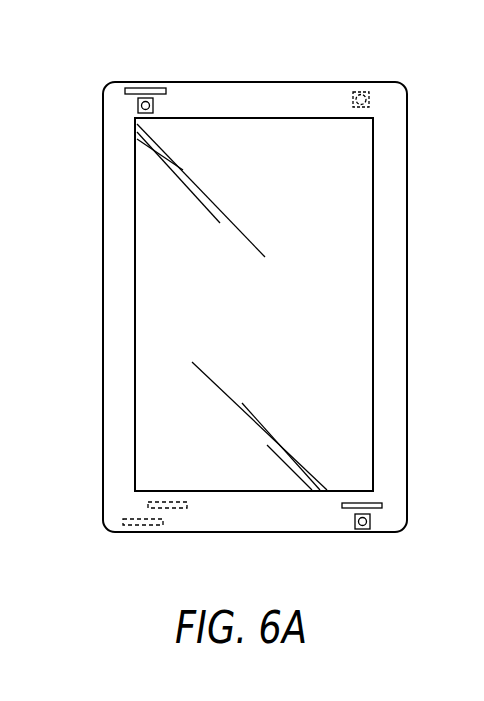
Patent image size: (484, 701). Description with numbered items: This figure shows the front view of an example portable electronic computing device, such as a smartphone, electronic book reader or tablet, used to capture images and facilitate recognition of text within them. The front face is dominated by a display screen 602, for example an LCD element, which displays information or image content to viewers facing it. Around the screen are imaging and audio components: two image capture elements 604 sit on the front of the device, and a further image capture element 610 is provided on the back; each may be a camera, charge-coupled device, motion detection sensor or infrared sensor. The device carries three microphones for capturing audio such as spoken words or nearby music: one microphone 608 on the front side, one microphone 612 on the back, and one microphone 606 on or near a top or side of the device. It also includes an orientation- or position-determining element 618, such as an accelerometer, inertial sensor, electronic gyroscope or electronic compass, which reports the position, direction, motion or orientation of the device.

The display screen 602 is at (135, 362).
The image capture element 604 is at (138, 106).
The microphone 606 is at (152, 88).
The microphone 608 is at (383, 505).
The image capture element 610 is at (359, 90).
The microphone 612 is at (176, 508).
The orientation- or position-determining element 618 is at (142, 526).